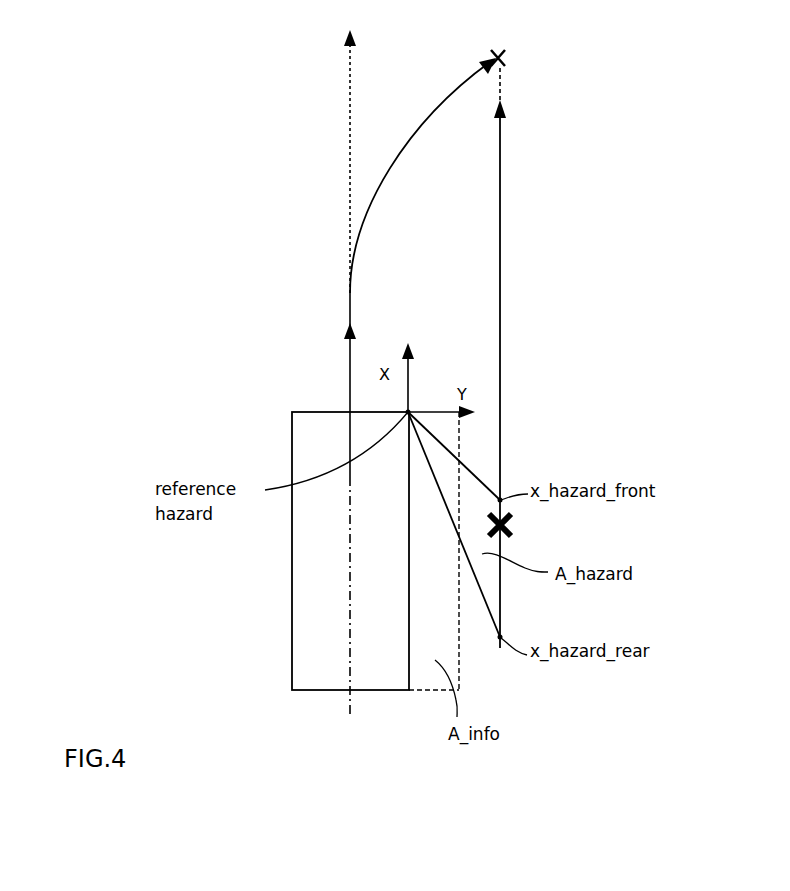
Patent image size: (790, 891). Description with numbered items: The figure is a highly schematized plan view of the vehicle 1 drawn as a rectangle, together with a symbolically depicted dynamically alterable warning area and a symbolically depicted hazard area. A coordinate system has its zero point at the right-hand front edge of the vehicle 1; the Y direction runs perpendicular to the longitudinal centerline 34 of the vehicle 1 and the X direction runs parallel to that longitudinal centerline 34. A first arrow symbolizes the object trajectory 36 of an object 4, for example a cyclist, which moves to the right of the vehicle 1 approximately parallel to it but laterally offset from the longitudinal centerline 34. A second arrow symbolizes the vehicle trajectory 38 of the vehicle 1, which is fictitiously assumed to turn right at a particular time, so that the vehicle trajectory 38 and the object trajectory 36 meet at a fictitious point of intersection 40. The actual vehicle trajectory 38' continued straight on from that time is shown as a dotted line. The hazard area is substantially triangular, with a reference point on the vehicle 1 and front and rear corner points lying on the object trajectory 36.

The vehicle 1 is at (309, 592).
The longitudinal centerline 34 is at (342, 700).
The actual vehicle trajectory 38' is at (324, 161).
The vehicle trajectory 38 is at (420, 235).
The object trajectory 36 is at (500, 265).
The fictitious point of intersection 40 is at (512, 37).
The object 4 is at (512, 525).